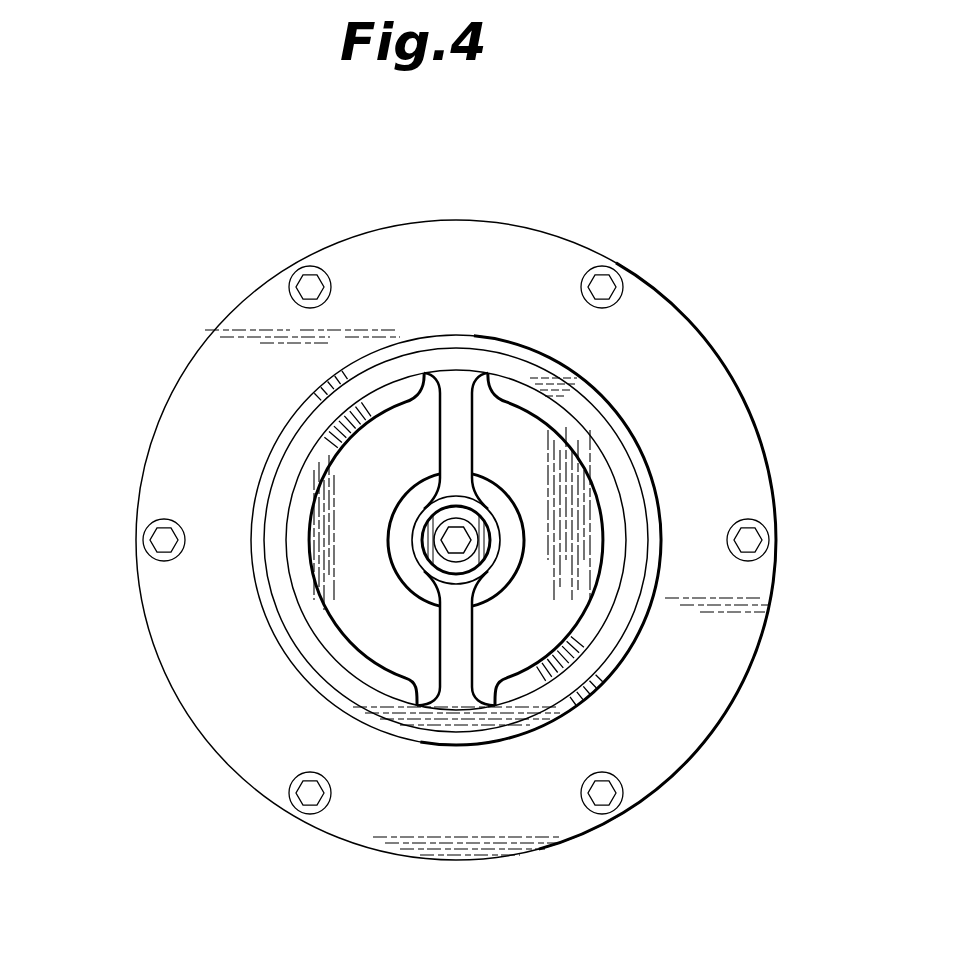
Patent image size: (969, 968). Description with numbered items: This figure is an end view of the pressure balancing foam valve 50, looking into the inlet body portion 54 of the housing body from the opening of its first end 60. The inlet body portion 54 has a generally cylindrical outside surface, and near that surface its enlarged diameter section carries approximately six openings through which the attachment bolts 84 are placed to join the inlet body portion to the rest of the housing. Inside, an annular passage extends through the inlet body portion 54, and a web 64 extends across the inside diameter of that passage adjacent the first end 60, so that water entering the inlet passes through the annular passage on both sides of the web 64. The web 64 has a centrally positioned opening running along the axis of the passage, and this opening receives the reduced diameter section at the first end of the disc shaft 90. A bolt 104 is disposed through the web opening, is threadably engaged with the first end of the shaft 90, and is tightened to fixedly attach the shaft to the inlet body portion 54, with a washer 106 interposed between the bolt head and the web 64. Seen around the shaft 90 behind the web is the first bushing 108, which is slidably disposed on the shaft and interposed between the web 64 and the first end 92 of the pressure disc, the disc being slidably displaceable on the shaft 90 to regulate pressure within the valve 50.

The pressure balancing foam valve 50 is at (640, 215).
The inlet body portion 54 is at (427, 290).
The first end 60 is at (340, 402).
The web 64 is at (455, 653).
The attachment bolts 84 is at (600, 797).
The disc shaft 90 is at (582, 632).
The first end 92 is at (348, 488).
The bolt 104 is at (455, 540).
The washer 106 is at (495, 536).
The first bushing 108 is at (507, 570).